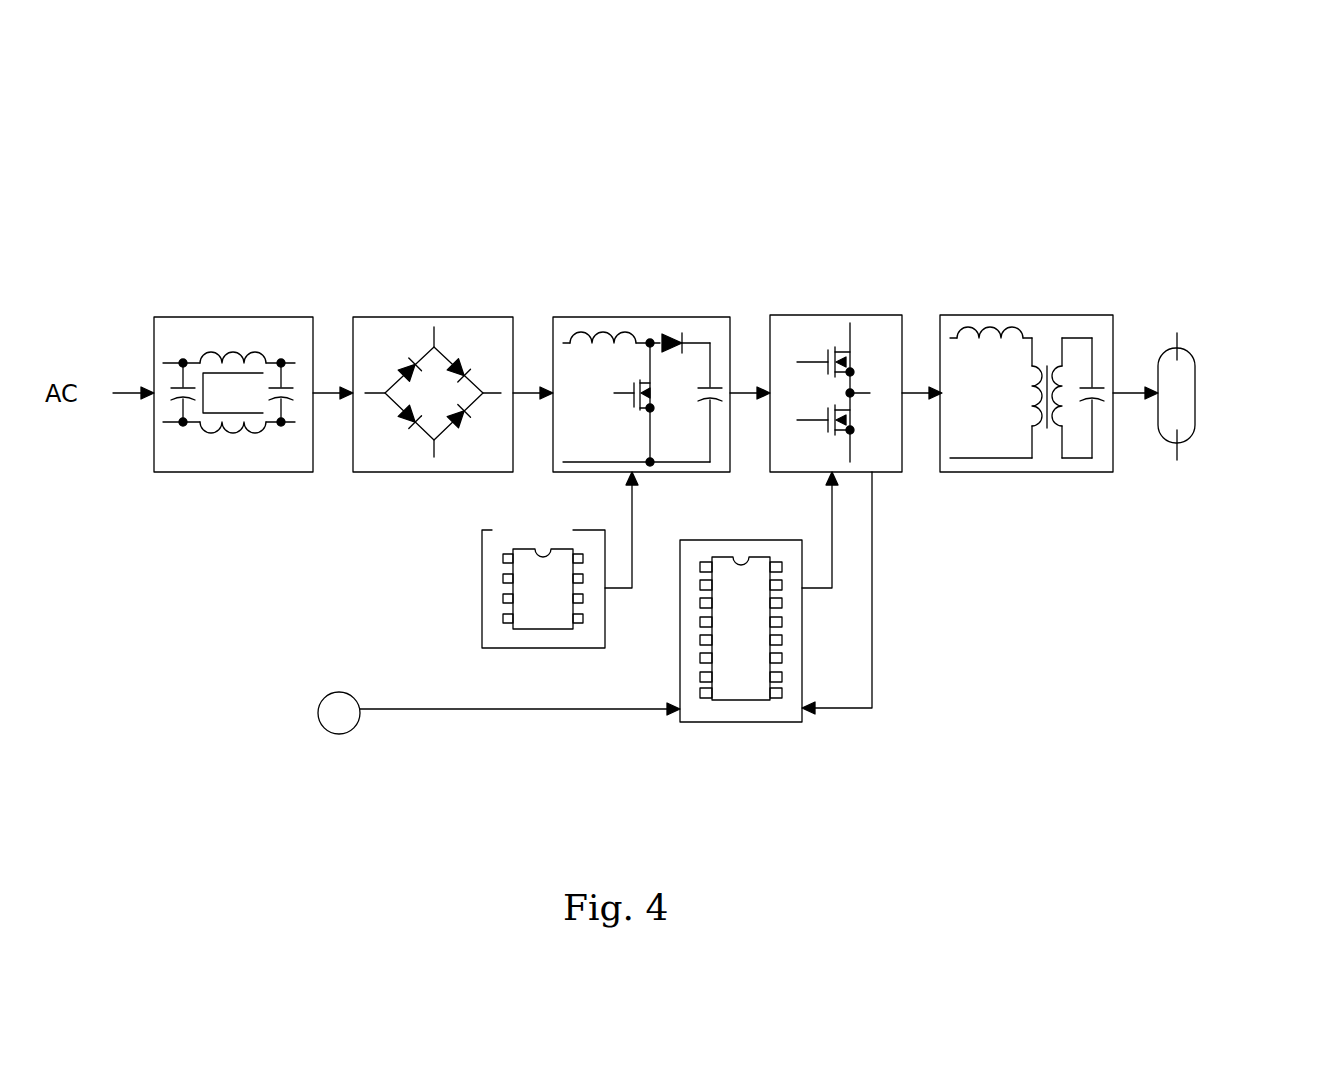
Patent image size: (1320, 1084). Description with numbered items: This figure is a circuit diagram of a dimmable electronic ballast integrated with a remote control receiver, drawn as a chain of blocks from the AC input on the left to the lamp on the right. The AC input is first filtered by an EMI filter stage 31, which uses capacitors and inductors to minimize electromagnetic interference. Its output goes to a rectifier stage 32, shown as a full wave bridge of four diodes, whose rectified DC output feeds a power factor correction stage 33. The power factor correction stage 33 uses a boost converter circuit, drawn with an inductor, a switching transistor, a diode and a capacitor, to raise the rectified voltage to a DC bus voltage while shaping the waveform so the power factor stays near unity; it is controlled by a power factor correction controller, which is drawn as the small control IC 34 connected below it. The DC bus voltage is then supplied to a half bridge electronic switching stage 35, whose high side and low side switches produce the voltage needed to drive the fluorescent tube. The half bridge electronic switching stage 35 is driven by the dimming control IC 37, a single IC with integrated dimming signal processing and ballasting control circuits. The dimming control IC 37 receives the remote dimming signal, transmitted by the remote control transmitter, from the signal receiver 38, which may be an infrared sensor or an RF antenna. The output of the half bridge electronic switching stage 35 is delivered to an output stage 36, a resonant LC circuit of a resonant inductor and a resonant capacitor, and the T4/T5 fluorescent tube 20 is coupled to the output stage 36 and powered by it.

The T4/T5 fluorescent tube 20 is at (1180, 388).
The EMI filter stage 31 is at (300, 313).
The rectifier stage 32 is at (495, 320).
The power factor correction stage 33 is at (565, 320).
The buck controller IC 34 is at (482, 590).
The half bridge electronic switching stage 35 is at (893, 338).
The output stage 36 is at (1105, 335).
The dimming control IC 37 is at (802, 622).
The signal receiver 38 is at (747, 388).